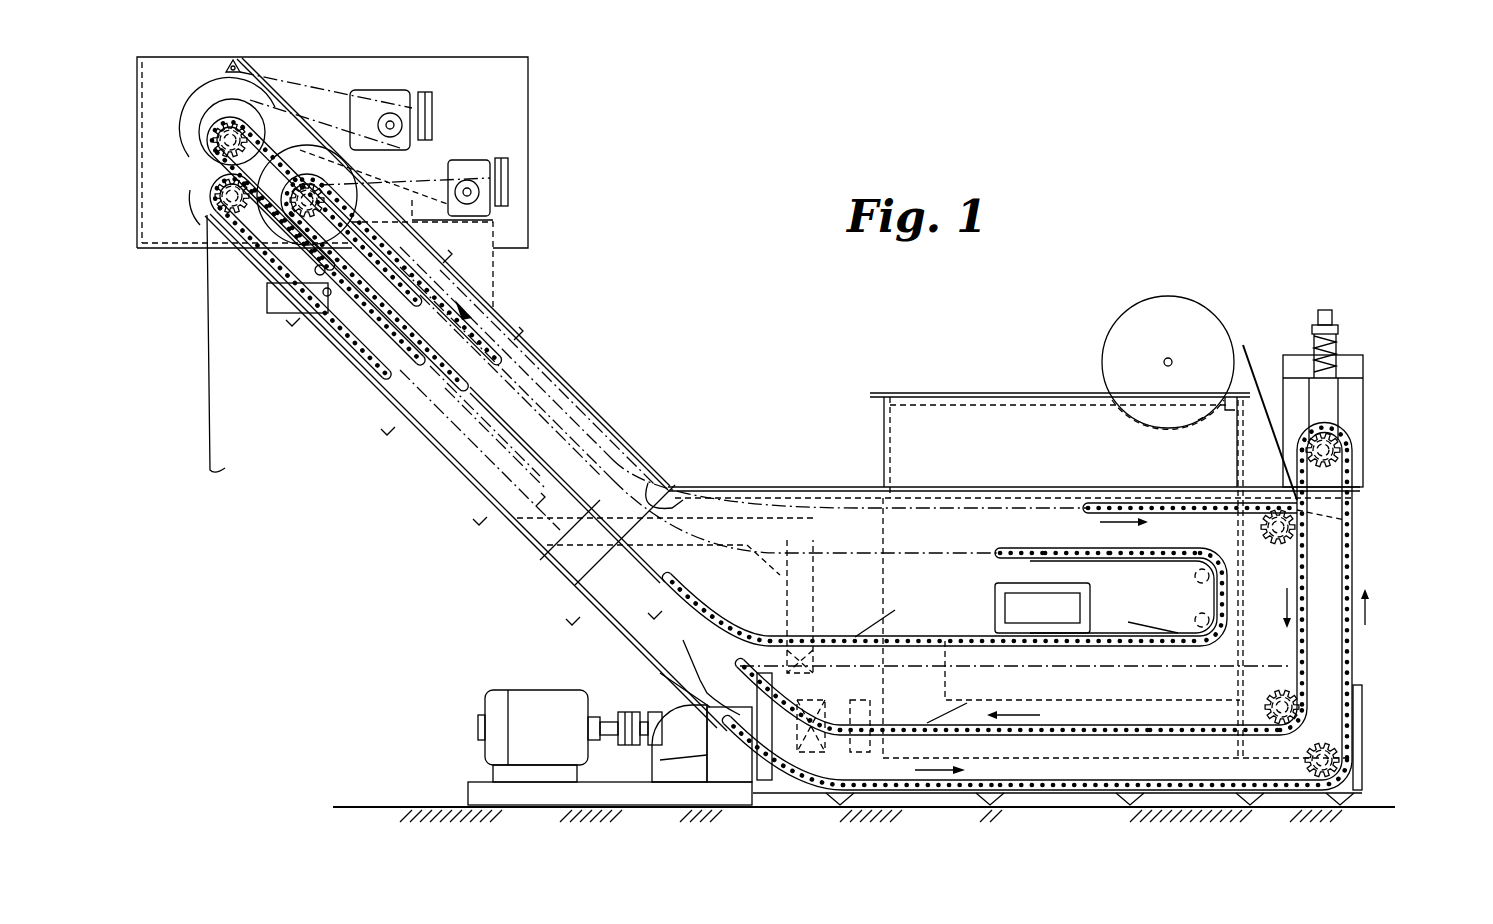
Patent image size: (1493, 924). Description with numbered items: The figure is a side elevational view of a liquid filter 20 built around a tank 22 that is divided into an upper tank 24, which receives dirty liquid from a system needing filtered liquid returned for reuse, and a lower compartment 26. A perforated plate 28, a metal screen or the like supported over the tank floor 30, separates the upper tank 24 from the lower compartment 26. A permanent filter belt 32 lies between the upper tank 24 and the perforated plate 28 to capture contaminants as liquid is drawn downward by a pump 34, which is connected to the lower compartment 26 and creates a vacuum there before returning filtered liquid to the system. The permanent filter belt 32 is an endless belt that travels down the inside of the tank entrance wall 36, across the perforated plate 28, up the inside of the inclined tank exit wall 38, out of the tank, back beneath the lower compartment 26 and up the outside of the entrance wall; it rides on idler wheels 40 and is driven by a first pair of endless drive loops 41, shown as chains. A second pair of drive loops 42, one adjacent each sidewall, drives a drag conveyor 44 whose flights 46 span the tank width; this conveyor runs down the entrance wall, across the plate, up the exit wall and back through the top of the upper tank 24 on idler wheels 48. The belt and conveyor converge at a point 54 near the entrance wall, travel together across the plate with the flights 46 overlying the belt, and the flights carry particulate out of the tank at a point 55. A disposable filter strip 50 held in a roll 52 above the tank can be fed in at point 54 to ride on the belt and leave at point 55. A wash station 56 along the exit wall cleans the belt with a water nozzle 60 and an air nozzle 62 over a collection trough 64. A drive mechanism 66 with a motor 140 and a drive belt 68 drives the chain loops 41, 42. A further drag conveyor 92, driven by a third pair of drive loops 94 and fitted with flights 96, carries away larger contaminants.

The liquid filter 20 is at (1110, 185).
The tank 22 is at (855, 475).
The upper tank 24 is at (962, 612).
The lower compartment 26 is at (982, 745).
The perforated plate 28 is at (1138, 735).
The tank floor 30 is at (1110, 735).
The permanent filter belt 32 is at (1248, 735).
The pump 34 is at (520, 717).
The tank entrance wall 36 is at (1322, 582).
The inclined tank exit wall 38 is at (400, 360).
The idler wheels 40 is at (222, 197).
The first pair of endless drive loops 41 is at (895, 775).
The second pair of endless drive loops 42 is at (1107, 502).
The drag conveyor 44 is at (1143, 507).
The flights 46 is at (1210, 512).
The idler wheels 48 is at (1282, 522).
The disposable filter strip 50 is at (210, 437).
The roll 52 is at (1215, 330).
The convergence point 54 is at (1350, 507).
The exit point 55 is at (200, 160).
The wash station 56 is at (226, 256).
The water nozzle 60 is at (330, 272).
The air nozzle 62 is at (342, 298).
The collection trough 64 is at (280, 314).
The drive mechanism 66 is at (478, 118).
The drive belt 68 is at (318, 100).
The drag conveyor 92 is at (1087, 548).
The third pair of endless drive loops 94 is at (1030, 552).
The flights 96 is at (1127, 560).
The motor 140 is at (387, 93).